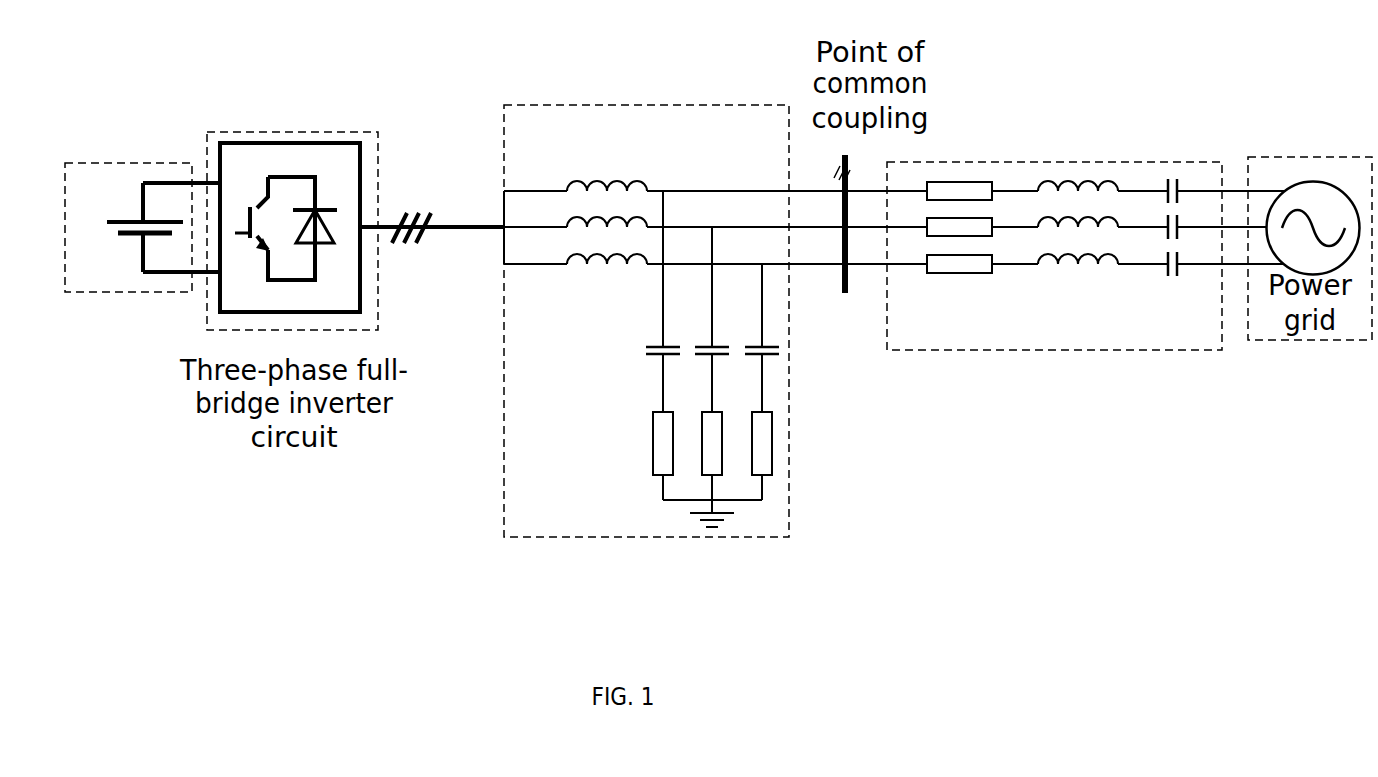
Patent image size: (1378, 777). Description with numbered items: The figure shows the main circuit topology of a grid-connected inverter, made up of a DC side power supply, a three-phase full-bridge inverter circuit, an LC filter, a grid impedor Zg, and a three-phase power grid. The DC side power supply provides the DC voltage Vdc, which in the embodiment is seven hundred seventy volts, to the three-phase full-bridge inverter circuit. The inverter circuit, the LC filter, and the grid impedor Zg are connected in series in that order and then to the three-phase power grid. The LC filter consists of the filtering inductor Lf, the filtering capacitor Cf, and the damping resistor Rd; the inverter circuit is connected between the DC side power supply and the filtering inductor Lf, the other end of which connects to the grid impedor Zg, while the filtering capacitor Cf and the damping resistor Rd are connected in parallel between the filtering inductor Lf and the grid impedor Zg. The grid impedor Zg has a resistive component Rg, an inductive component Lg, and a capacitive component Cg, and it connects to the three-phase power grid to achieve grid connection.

The DC voltage of the DC side power supply Vdc is at (143, 227).
The filtering inductor Lf is at (607, 194).
The filtering capacitor Cf is at (689, 329).
The damping resistor Rd is at (688, 443).
The grid impedor Zg is at (1054, 230).
The resistive component of the grid impedor Rg is at (959, 256).
The inductive component of the grid impedor Lg is at (1078, 256).
The capacitive component of the grid impedor Cg is at (1177, 255).